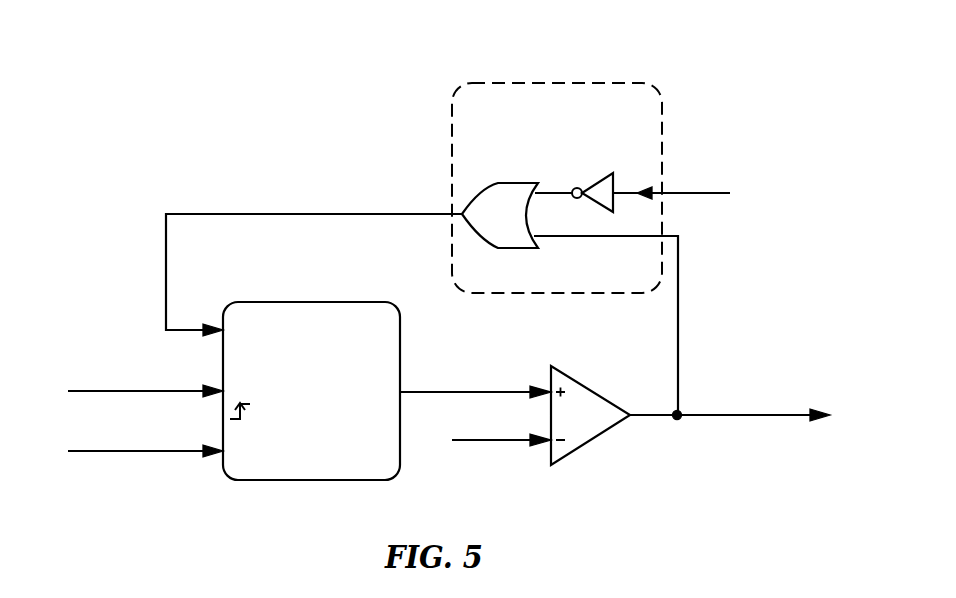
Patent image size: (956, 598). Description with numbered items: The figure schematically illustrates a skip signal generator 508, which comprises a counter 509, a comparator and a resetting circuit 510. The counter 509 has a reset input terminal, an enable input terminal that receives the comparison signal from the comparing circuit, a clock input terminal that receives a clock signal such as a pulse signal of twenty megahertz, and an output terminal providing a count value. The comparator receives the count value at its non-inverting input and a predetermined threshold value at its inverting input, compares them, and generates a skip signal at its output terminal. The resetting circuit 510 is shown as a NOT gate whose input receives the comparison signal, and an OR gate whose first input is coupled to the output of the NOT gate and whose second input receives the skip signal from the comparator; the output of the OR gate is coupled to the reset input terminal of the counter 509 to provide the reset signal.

The skip signal generator 508 is at (747, 50).
The counter 509 is at (252, 481).
The resetting circuit 510 is at (468, 296).